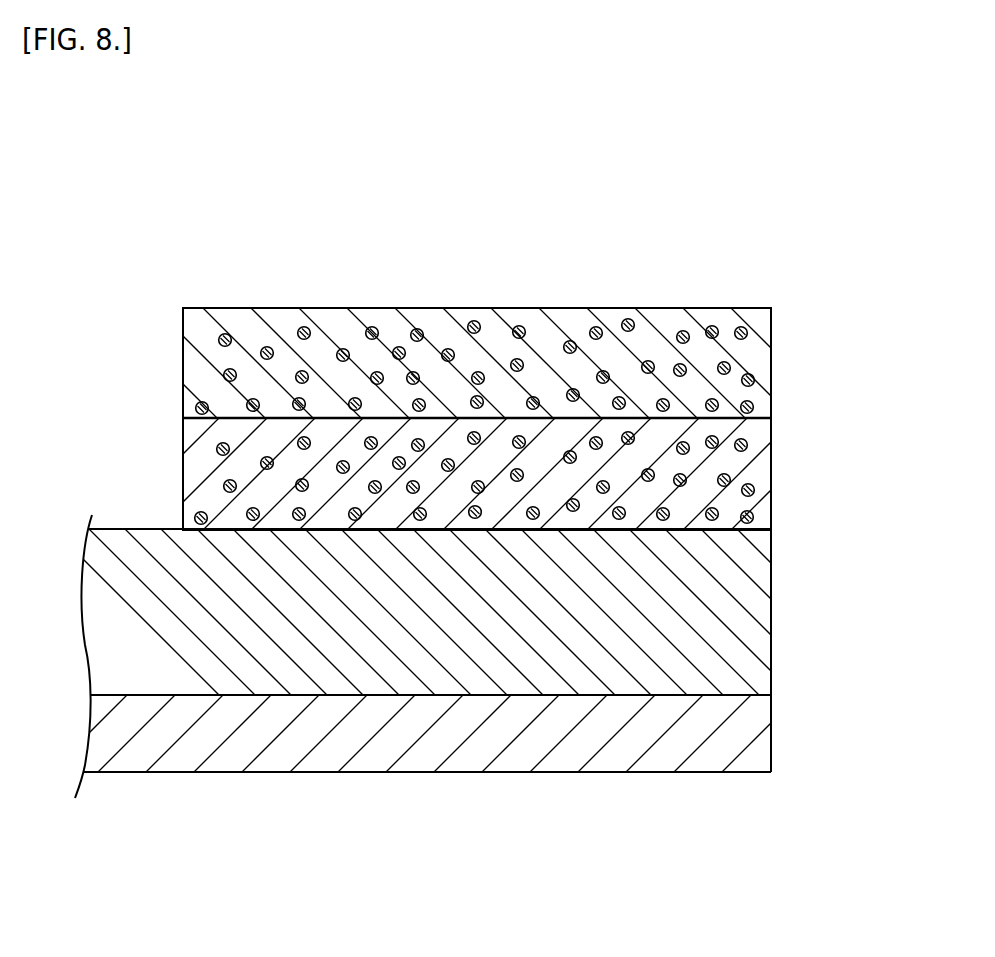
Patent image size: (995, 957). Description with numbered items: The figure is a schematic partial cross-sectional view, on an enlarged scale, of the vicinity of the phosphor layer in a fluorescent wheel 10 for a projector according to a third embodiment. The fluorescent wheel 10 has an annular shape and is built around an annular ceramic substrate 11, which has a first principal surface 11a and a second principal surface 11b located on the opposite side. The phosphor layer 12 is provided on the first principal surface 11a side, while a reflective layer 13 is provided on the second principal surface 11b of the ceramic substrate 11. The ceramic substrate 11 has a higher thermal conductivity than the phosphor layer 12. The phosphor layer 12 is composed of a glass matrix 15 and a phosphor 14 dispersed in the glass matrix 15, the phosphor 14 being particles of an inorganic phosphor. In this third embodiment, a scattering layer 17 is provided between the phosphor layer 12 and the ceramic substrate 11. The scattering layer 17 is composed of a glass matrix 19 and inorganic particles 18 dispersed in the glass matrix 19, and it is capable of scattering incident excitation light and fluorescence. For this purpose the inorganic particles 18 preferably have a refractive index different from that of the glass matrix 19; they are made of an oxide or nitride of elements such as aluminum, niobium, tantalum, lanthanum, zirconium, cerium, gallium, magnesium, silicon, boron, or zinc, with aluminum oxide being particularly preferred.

The fluorescent wheel 10 is at (664, 153).
The ceramic substrate 11 is at (478, 656).
The first principal surface 11a is at (752, 531).
The second principal surface 11b is at (728, 693).
The phosphor layer 12 is at (480, 321).
The reflective layer 13 is at (771, 735).
The phosphor 14 is at (476, 326).
The glass matrix 15 is at (433, 316).
The scattering layer 17 is at (470, 468).
The inorganic particles 18 is at (218, 449).
The glass matrix 19 is at (206, 497).